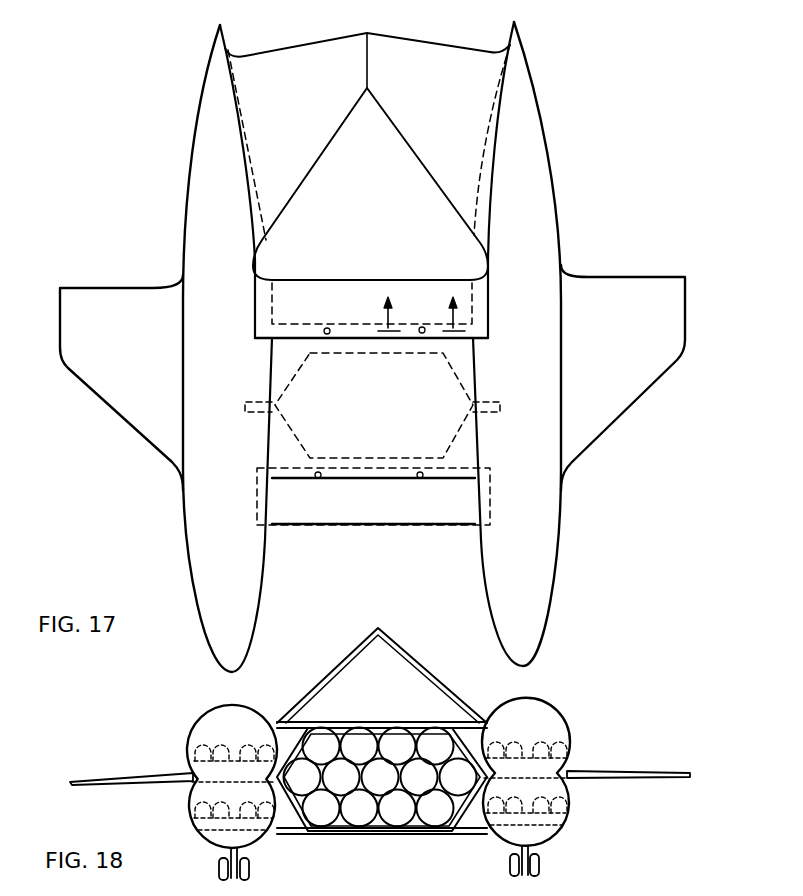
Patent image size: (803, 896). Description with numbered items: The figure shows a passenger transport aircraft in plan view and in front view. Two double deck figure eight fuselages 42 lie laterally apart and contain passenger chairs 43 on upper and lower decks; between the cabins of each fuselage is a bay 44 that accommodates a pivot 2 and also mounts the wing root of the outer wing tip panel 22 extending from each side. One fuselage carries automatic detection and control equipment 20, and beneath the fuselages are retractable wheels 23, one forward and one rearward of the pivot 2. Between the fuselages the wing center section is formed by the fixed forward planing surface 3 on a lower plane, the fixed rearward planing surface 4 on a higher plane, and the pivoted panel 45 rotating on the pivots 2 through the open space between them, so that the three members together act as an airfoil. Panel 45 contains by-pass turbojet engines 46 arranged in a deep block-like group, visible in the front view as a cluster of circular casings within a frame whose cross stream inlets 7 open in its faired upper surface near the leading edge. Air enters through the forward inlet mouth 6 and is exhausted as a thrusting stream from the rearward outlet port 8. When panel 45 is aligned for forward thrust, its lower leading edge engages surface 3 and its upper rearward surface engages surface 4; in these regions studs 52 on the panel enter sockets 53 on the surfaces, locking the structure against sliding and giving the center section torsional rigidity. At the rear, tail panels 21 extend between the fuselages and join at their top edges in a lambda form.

In FIG. 17, the pivot 2 is at (250, 413).
In FIG. 17, the horizontal aerodynamic planing surface 3 is at (287, 520).
In FIG. 18, the horizontal aerodynamic planing surface 3 is at (295, 834).
In FIG. 17, the horizontal planing surface 4 is at (283, 292).
In FIG. 18, the horizontal planing surface 4 is at (290, 747).
In FIG. 17, the forward inlet mouth 6 is at (355, 482).
In FIG. 18, the cross stream inlets 7 is at (373, 732).
In FIG. 17, the rearward outlet port 8 is at (343, 323).
In FIG. 17, the automatic detection and control equipment 20 is at (426, 329).
In FIG. 17, the tail panels 21 is at (323, 130).
In FIG. 18, the tail panels 21 is at (430, 673).
In FIG. 17, the wing tip panel 22 is at (92, 396).
In FIG. 18, the wing tip panel 22 is at (94, 779).
In FIG. 18, the retractable wheels 23 is at (218, 868).
In FIG. 17, the double deck figure eight fuselage 42 is at (193, 148).
In FIG. 18, the double deck figure eight fuselage 42 is at (200, 722).
In FIG. 18, the passenger chairs 43 is at (217, 812).
In FIG. 18, the bay 44 is at (215, 778).
In FIG. 17, the pivoted panel 45 is at (348, 401).
In FIG. 18, the pivoted panel 45 is at (337, 753).
In FIG. 18, the by-pass turbojet engines 46 is at (352, 830).
In FIG. 17, the studs 52 is at (327, 327).
In FIG. 18, the studs 52 is at (467, 891).
In FIG. 17, the sockets 53 is at (422, 326).
In FIG. 18, the sockets 53 is at (557, 891).